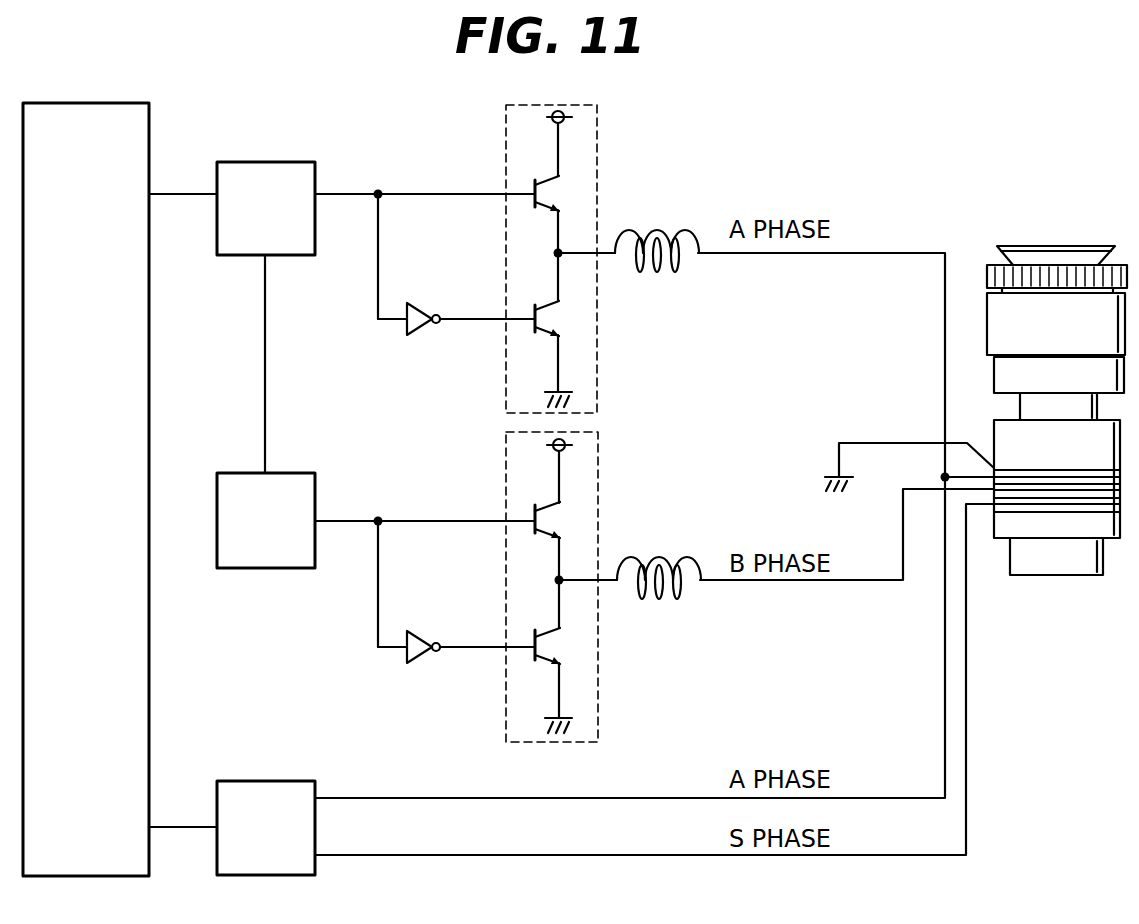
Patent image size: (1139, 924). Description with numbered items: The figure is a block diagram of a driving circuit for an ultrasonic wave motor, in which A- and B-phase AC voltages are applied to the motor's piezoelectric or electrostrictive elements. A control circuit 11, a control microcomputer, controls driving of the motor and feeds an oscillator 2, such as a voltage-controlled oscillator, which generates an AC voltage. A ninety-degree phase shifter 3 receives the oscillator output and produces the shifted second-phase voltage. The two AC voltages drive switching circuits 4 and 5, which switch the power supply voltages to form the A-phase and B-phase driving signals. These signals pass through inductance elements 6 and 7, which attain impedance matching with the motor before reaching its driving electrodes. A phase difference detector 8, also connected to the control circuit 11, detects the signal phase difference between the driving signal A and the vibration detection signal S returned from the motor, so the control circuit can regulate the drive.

The control circuit 11 is at (115, 102).
The oscillator 2 is at (283, 162).
The 90° phase shifter 3 is at (283, 473).
The switching circuit 4 is at (598, 124).
The switching circuit 5 is at (598, 451).
The inductance element 6 is at (670, 231).
The inductance element 7 is at (672, 558).
The phase difference detector 8 is at (283, 781).